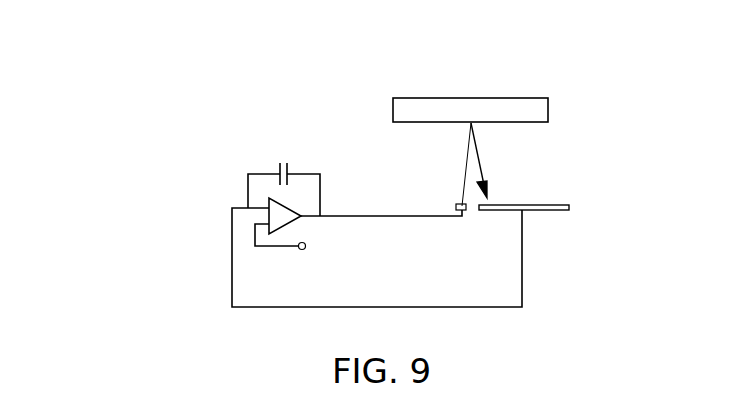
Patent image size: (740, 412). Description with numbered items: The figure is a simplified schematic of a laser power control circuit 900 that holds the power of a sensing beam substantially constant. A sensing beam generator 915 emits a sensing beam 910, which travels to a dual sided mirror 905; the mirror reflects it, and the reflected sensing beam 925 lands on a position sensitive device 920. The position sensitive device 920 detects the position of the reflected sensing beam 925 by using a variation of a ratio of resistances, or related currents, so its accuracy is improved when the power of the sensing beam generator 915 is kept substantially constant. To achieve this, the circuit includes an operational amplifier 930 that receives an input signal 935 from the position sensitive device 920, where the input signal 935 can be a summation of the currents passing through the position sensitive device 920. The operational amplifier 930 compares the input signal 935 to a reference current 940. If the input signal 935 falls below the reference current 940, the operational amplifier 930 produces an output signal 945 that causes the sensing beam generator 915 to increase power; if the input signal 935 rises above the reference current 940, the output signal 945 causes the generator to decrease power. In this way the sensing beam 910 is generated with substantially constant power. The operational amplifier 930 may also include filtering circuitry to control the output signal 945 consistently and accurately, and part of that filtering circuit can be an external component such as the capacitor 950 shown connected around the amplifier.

The laser power control circuit 900 is at (168, 133).
The dual sided mirror 905 is at (540, 111).
The emitted sensing beam 910 is at (464, 172).
The sensing beam generator 915 is at (455, 205).
The position sensitive device 920 is at (552, 210).
The reflected sensing beam 925 is at (481, 168).
The operational amplifier 930 is at (278, 209).
The input signal 935 is at (522, 288).
The reference current Iref 940 is at (303, 251).
The output signal 945 is at (363, 215).
The capacitor 950 is at (280, 163).